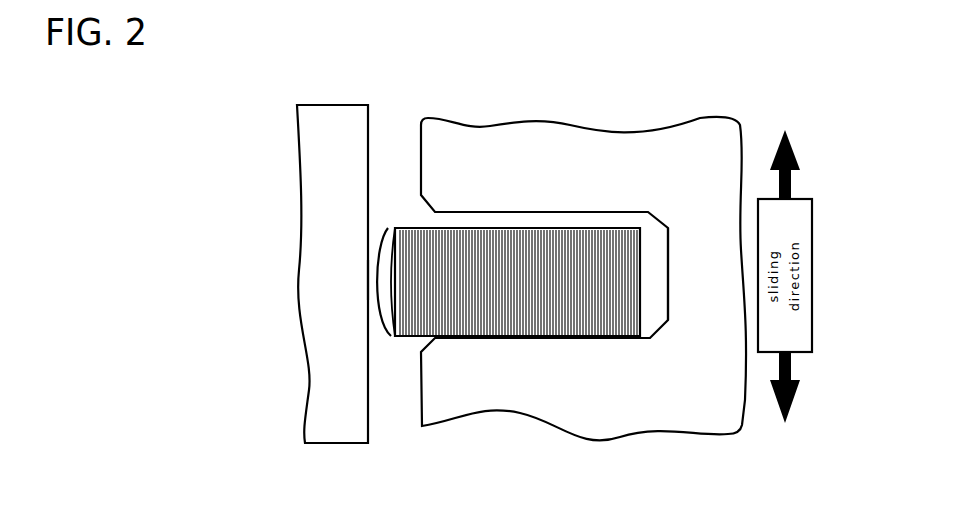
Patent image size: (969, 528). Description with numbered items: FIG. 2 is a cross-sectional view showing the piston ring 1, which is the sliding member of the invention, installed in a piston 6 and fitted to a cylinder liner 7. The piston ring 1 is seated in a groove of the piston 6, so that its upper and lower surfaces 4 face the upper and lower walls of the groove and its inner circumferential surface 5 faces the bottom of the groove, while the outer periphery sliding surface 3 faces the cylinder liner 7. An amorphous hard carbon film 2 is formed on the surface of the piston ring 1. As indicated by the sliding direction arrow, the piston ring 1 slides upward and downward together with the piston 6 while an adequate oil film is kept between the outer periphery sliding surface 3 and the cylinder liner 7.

The piston ring 1 is at (489, 273).
The amorphous hard carbon film 2 is at (381, 270).
The outer periphery sliding surface 3 is at (368, 282).
The upper and lower surfaces 4 is at (558, 228).
The inner circumferential surface 5 is at (638, 290).
The piston 6 is at (686, 185).
The cylinder liner 7 is at (330, 213).